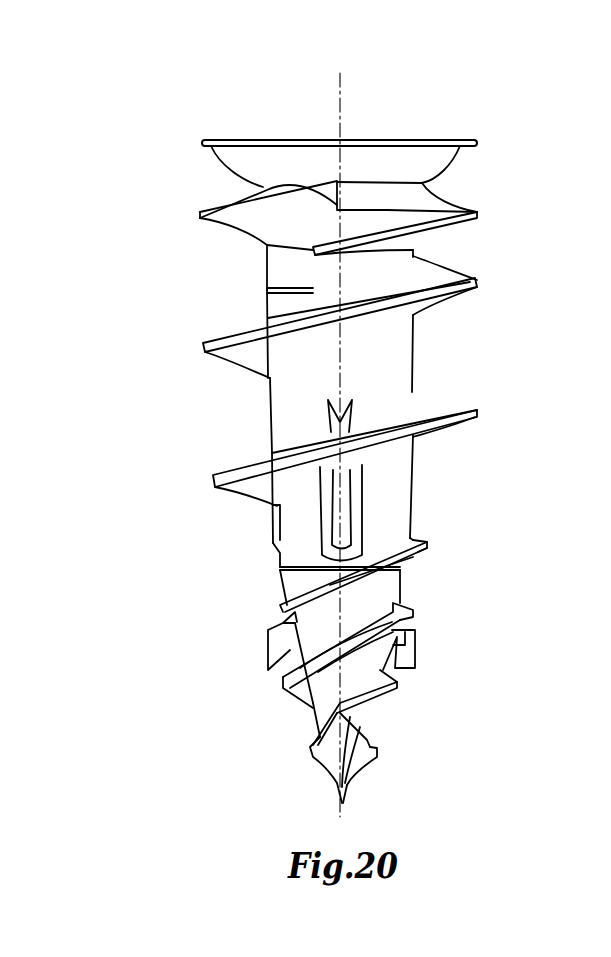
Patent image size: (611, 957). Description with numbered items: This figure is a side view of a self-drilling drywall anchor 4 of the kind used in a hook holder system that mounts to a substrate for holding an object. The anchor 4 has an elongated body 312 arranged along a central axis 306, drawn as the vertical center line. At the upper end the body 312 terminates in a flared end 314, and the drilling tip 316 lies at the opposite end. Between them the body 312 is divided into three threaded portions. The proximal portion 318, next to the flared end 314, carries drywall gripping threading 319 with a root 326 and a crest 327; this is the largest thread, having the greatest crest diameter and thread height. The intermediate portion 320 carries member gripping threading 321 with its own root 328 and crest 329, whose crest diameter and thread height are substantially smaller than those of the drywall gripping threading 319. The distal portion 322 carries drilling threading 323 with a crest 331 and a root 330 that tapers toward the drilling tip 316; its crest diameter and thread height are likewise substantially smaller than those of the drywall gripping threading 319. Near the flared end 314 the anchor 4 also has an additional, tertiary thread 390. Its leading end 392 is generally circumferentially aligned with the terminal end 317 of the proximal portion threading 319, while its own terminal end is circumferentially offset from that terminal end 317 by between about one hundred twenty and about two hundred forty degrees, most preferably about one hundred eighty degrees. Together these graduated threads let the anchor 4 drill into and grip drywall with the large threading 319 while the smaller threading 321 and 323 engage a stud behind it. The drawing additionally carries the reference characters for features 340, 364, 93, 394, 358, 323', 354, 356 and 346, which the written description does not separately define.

The drywall anchor 4 is at (153, 140).
The axis 306 is at (345, 90).
The head top surface 340 is at (268, 138).
The flared end 314 is at (437, 153).
The head underside 364 is at (237, 172).
The terminal end 317 is at (335, 206).
The upper thread flank 93 is at (372, 226).
The crest 327 is at (200, 215).
The second thread crest 394 is at (482, 213).
The additional tertiary thread 390 is at (457, 202).
The leading end 392 is at (265, 250).
The root 326 is at (264, 282).
The proximal portion 318 is at (220, 309).
The drywall gripping threading 319 is at (463, 277).
The elongated body 312 is at (400, 350).
The intermediate portion 320 is at (222, 522).
The flute 358 is at (343, 483).
The root 328 is at (277, 555).
The member gripping threading 321 is at (417, 542).
The crest 329 is at (427, 547).
The cutting thread segment 323' is at (410, 655).
The cutting lobe 354 is at (267, 645).
The crest 331 is at (400, 680).
The drilling threading 323 is at (400, 714).
The root 330 is at (313, 715).
The distal portion 322 is at (258, 763).
The drilling tip 316 is at (350, 787).
The tip edge 356 is at (340, 802).
The point 346 is at (344, 807).